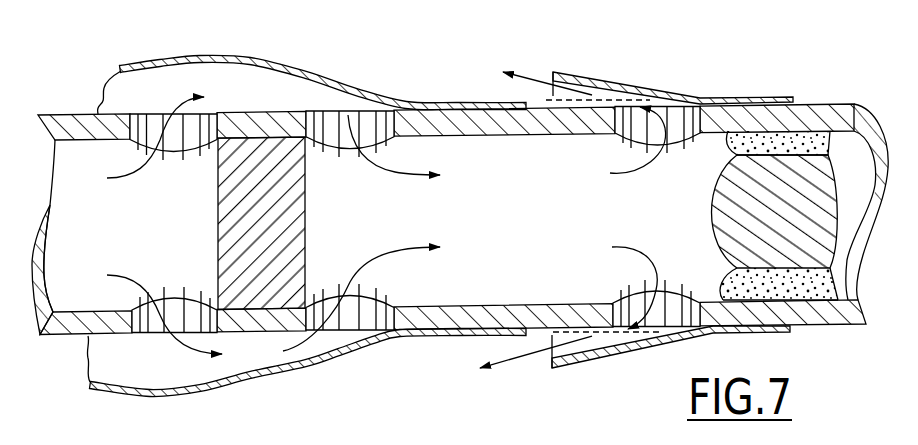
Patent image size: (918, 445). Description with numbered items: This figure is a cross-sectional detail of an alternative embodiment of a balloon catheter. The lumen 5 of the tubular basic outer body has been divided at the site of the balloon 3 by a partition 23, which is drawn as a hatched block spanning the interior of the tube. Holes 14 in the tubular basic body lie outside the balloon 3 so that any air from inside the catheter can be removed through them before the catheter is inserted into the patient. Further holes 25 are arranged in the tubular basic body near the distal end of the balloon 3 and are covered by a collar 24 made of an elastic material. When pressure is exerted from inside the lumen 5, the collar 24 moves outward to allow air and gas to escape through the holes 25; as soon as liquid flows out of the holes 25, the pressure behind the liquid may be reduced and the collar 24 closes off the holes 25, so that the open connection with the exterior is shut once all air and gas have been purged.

The balloon 3 is at (258, 62).
The lumen 5 is at (72, 188).
The holes 14 is at (148, 125).
The partition 23 is at (228, 200).
The collar 24 is at (566, 78).
The holes 25 is at (624, 131).